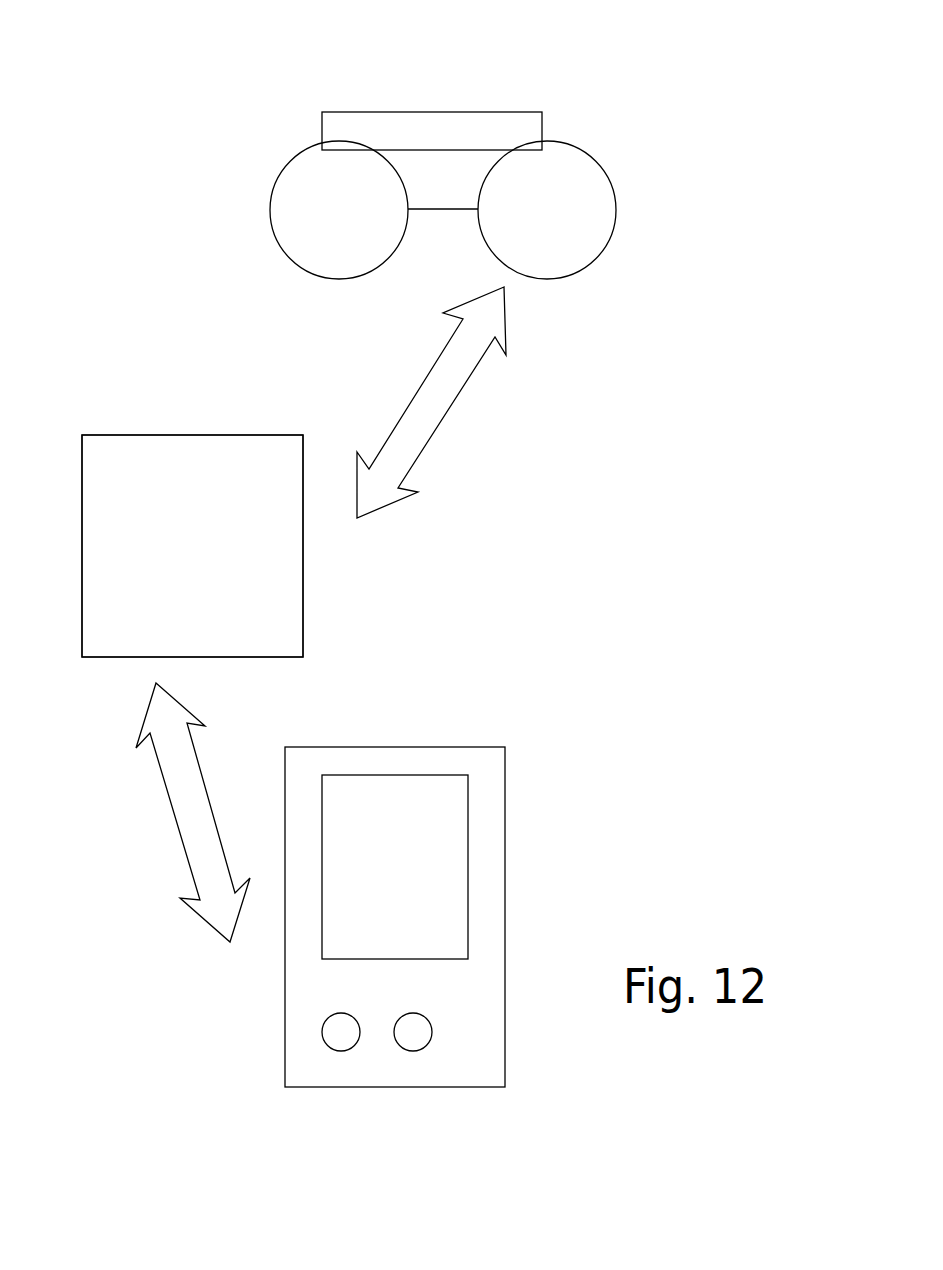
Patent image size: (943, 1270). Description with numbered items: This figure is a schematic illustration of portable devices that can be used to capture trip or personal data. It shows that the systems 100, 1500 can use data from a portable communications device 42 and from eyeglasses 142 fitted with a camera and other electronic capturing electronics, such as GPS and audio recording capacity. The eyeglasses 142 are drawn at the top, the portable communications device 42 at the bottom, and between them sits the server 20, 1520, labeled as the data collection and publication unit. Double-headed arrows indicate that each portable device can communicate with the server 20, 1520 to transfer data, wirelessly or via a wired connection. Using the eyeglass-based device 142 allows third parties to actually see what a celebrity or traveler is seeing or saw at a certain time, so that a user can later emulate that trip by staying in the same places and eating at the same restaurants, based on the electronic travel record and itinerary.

The eyeglasses 142 is at (485, 132).
The server 20 is at (224, 517).
The server 1520 is at (192, 546).
The portable communications device 42 is at (487, 903).
The system 100 is at (660, 477).
The system 1500 is at (660, 477).